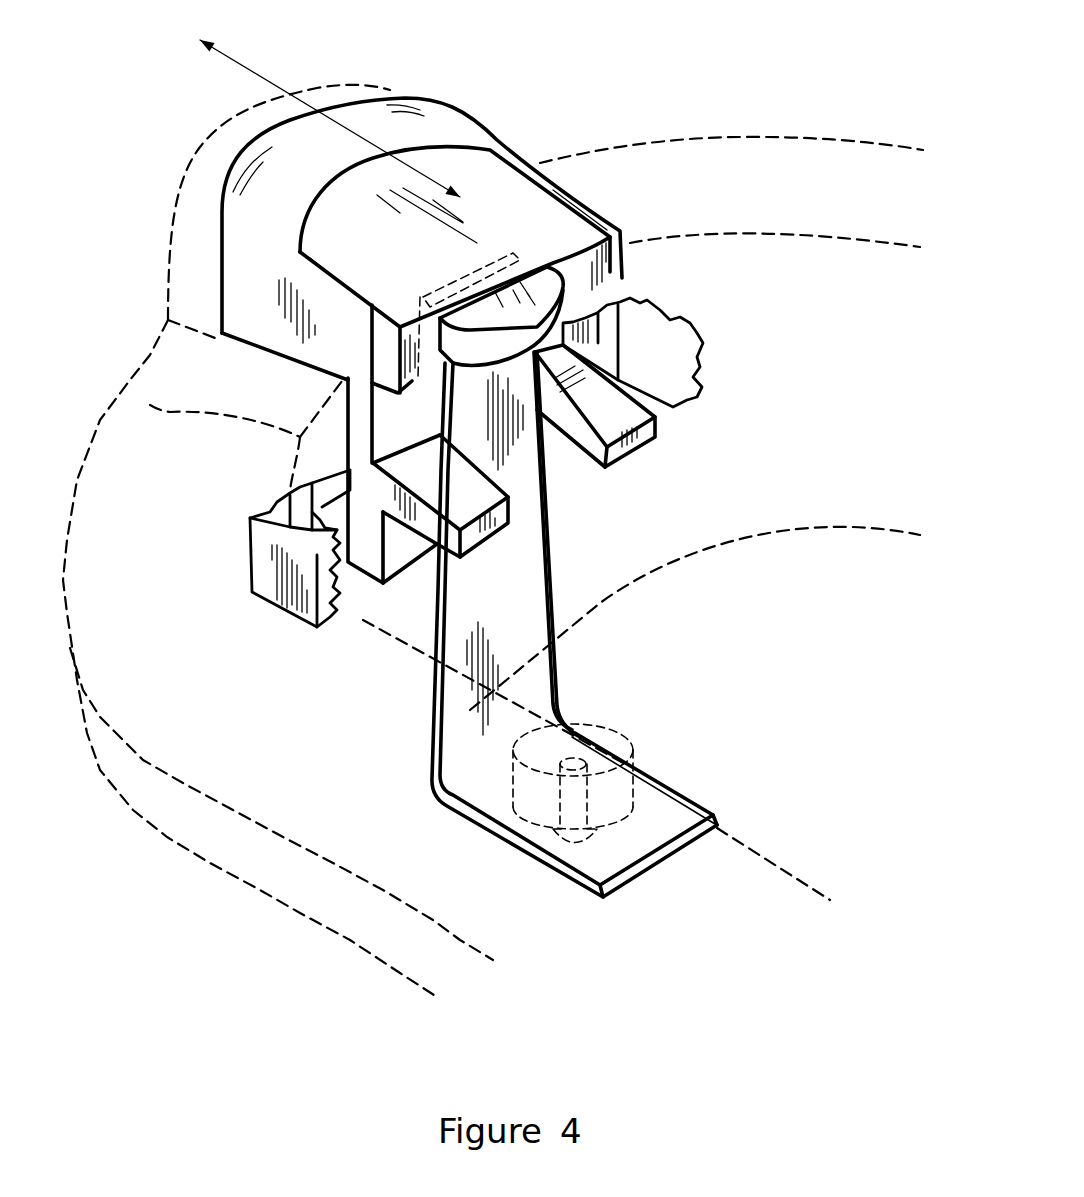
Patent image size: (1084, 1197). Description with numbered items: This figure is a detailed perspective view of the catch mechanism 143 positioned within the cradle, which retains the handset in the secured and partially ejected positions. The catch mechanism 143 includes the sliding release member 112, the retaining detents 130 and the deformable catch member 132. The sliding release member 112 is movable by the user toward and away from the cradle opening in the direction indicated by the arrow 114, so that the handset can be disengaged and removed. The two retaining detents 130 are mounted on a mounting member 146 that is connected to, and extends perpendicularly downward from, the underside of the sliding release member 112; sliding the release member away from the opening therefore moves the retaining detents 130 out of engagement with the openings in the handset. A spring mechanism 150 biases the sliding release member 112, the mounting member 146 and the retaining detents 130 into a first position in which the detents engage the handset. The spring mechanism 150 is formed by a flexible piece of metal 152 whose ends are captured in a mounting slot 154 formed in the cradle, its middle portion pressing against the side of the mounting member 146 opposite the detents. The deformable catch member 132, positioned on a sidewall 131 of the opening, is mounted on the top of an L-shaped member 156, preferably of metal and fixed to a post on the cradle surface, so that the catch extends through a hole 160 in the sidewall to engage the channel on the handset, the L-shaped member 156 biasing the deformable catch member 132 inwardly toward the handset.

The sliding release member 112 is at (490, 165).
The arrow 114 is at (240, 58).
The retaining detents 130 is at (627, 423).
The sidewall 131 is at (735, 497).
The deformable catch member 132 is at (570, 318).
The catch mechanism 143 is at (160, 283).
The mounting member 146 is at (360, 427).
The spring mechanism 150 is at (235, 433).
The flexible piece of metal 152 is at (345, 485).
The mounting slot 154 is at (675, 317).
The L-shaped member 156 is at (527, 600).
The hole 160 is at (445, 357).